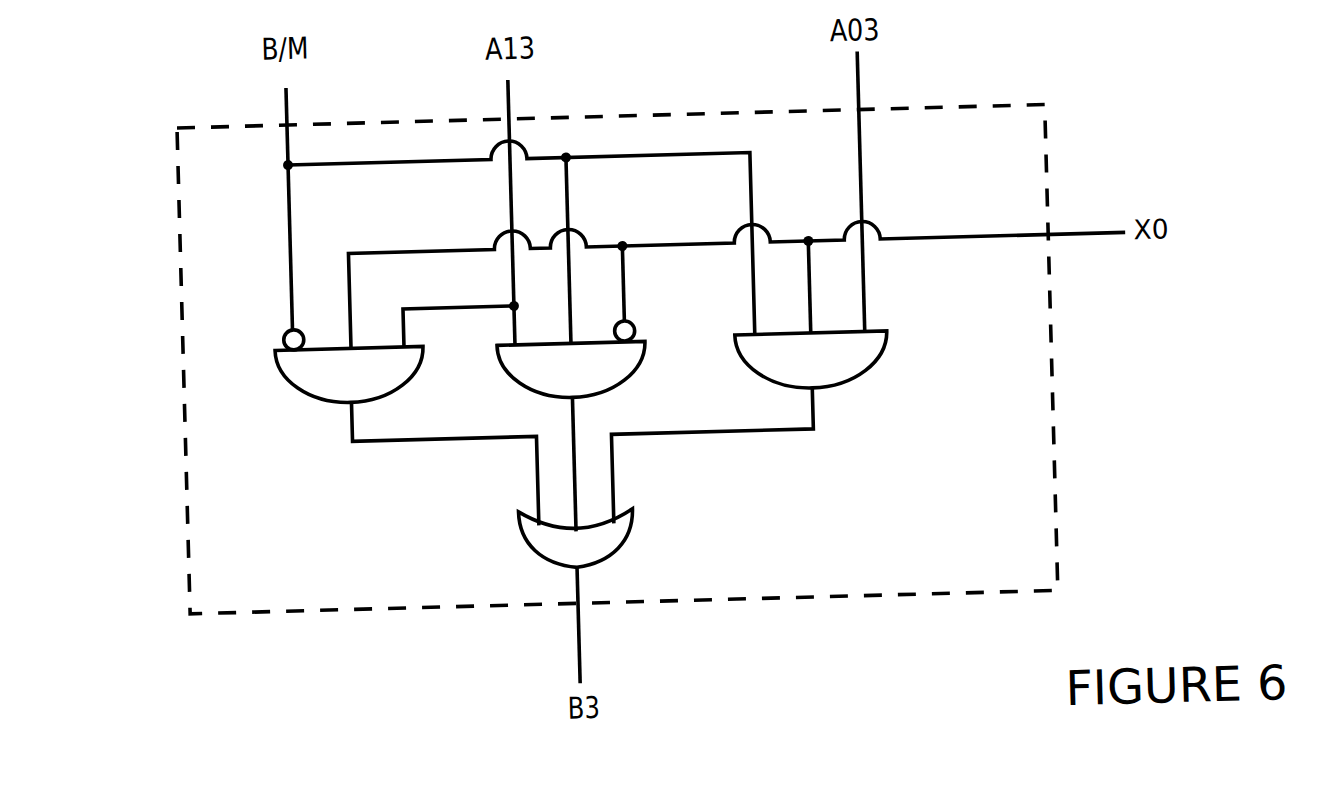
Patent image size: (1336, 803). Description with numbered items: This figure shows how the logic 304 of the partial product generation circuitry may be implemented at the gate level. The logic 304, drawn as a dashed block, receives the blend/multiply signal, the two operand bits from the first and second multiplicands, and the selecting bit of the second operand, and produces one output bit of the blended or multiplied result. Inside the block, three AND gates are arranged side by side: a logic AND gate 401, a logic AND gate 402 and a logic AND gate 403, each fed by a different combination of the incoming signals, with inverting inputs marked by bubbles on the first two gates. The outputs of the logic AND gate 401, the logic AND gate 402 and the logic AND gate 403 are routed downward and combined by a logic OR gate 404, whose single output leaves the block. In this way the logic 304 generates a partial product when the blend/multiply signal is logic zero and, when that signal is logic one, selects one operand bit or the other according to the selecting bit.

The logic gate 304 is at (931, 620).
The logic AND gate 401 is at (285, 398).
The logic AND gate 402 is at (489, 378).
The logic AND gate 403 is at (730, 377).
The logic OR gate 404 is at (505, 548).